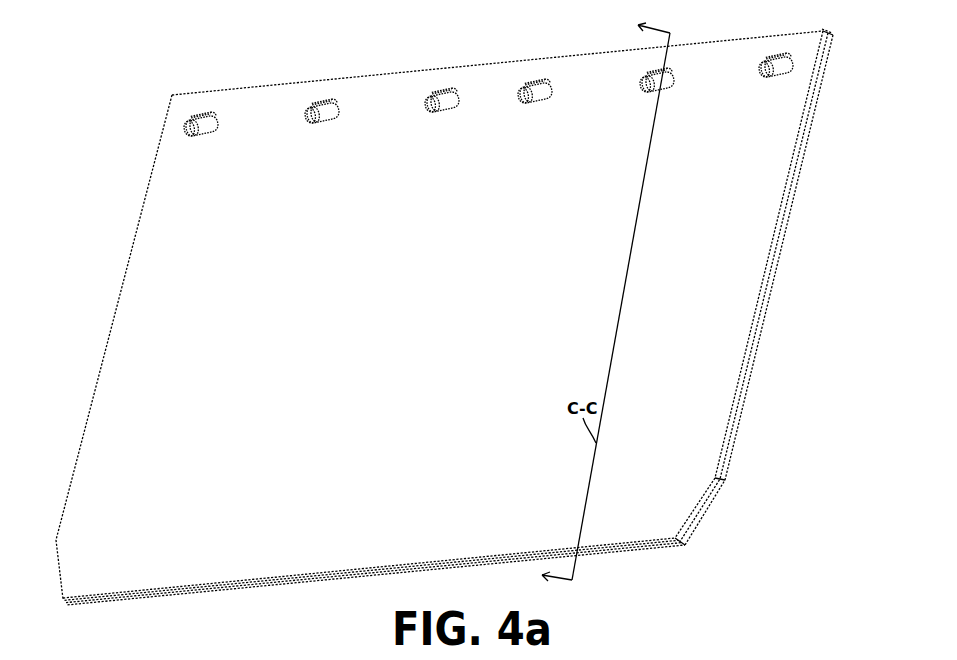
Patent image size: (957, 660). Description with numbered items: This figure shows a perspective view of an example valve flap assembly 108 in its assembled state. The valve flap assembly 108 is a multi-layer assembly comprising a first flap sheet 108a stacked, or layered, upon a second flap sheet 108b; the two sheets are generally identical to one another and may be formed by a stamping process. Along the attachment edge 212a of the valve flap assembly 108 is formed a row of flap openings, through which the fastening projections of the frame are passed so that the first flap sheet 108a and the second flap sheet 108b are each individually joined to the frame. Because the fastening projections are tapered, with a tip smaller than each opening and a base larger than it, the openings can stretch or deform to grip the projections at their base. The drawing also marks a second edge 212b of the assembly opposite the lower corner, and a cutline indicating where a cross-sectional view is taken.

The valve flap assembly 108 is at (147, 60).
The first flap sheet 108a is at (765, 286).
The second flap sheet 108b is at (764, 323).
The attachment edge 212a is at (840, 40).
The second edge 212b is at (705, 530).